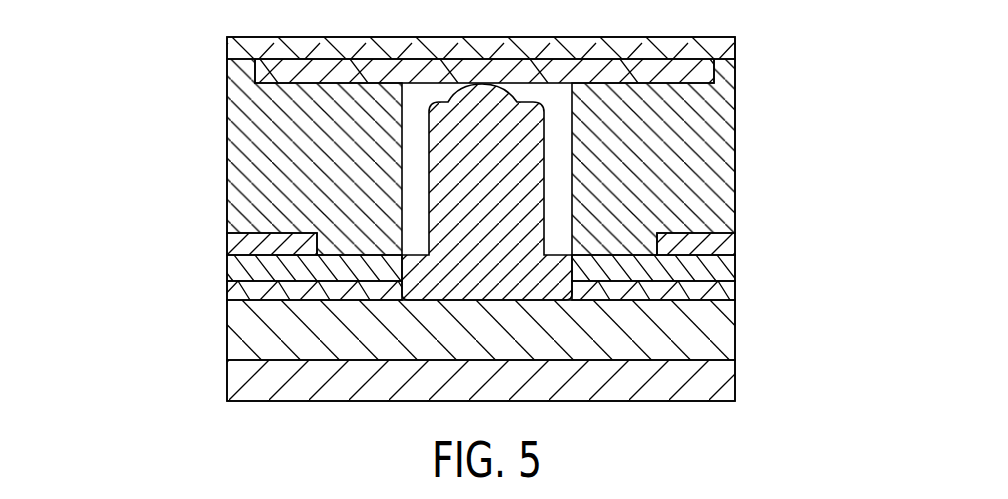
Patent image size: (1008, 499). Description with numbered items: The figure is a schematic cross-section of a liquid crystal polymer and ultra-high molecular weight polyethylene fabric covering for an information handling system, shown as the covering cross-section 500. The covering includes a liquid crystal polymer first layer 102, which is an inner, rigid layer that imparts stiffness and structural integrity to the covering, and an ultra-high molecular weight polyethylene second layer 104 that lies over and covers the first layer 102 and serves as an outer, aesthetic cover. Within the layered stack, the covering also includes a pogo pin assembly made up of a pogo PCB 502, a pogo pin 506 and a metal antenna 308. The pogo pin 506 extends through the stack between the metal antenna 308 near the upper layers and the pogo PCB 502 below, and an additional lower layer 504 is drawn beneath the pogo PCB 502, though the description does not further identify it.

The covering cross-section 500 is at (92, 118).
The ultra-high molecular weight polyethylene second layer 104 is at (724, 48).
The liquid crystal polymer first layer 102 is at (775, 58).
The metal antenna 308 is at (332, 73).
The pogo pin 506 is at (547, 175).
The pogo PCB 502 is at (722, 338).
The base substrate 504 is at (722, 378).